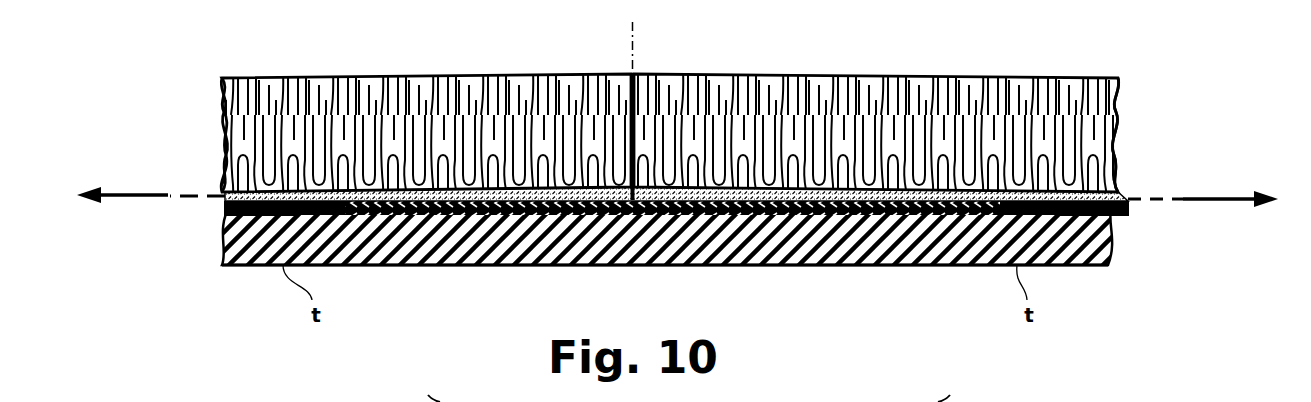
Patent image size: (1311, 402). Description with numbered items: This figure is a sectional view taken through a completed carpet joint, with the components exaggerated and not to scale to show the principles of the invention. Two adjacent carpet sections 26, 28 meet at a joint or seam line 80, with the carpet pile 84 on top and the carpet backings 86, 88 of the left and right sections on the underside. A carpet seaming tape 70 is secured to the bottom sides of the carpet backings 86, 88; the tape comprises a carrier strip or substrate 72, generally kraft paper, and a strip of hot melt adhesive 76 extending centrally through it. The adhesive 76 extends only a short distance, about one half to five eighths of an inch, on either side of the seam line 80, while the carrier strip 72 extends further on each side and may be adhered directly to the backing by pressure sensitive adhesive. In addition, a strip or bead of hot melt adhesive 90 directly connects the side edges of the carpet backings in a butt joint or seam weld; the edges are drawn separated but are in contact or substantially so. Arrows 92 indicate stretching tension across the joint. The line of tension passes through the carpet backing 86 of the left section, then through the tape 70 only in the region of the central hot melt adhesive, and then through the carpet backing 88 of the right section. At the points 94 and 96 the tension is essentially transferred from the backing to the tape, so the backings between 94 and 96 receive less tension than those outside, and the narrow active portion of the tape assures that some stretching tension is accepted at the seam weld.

The carpet section 26 is at (456, 73).
The carpet section 28 is at (891, 74).
The carpet seaming tape 70 is at (720, 265).
The carrier strip or substrate 72 is at (566, 265).
The strip of hot melt adhesive 76 is at (672, 265).
The joint or seam line 80 is at (640, 46).
The carpet pile 84 is at (222, 108).
The carpet backing 86 is at (232, 205).
The carpet backing 88 is at (1132, 212).
The strip or bead of hot melt adhesive 90 is at (652, 205).
The arrows 92 is at (135, 193).
The tension transfer point 94 is at (478, 265).
The tension transfer point 96 is at (816, 265).